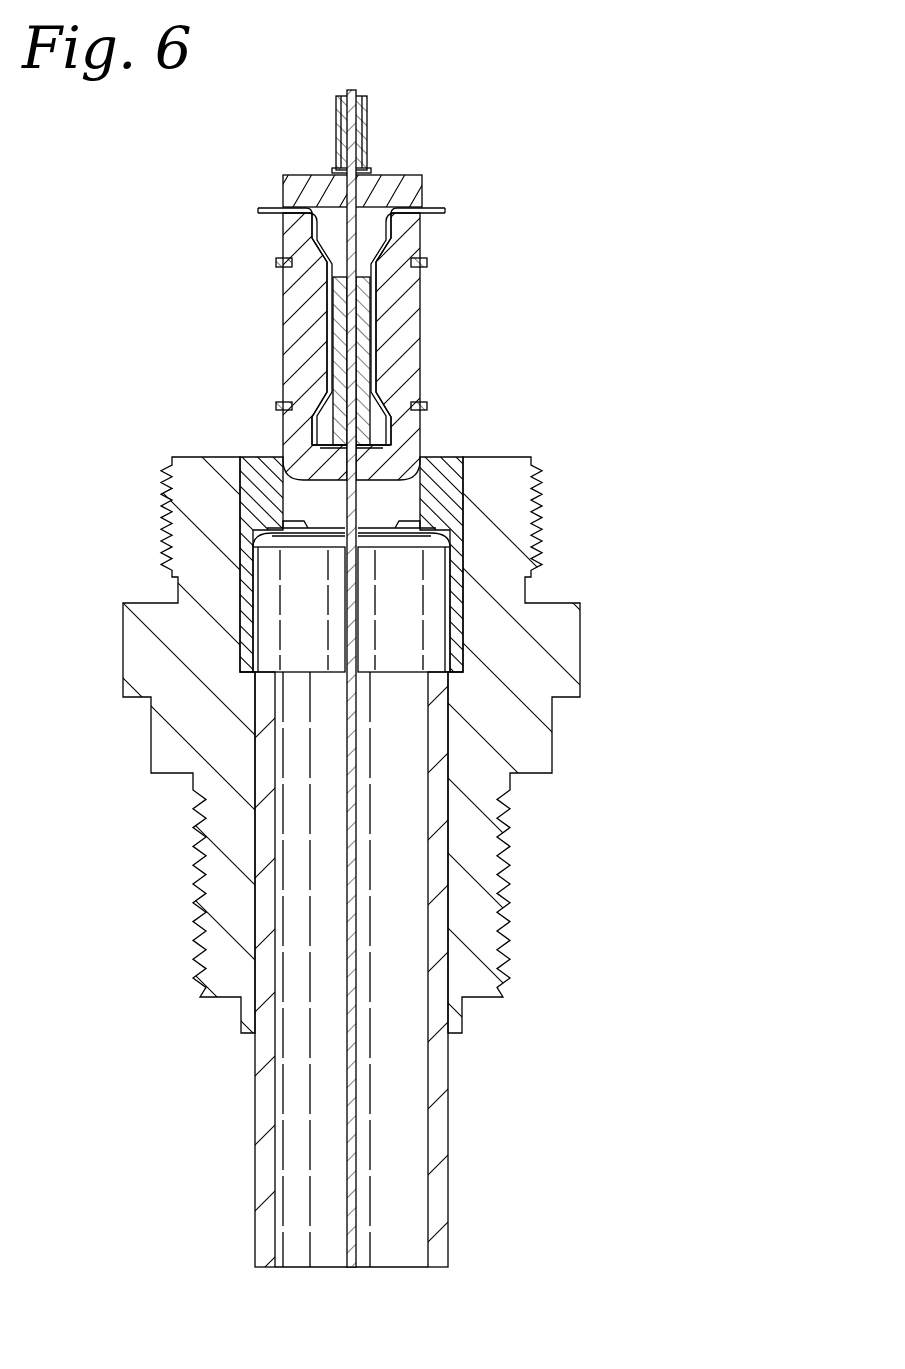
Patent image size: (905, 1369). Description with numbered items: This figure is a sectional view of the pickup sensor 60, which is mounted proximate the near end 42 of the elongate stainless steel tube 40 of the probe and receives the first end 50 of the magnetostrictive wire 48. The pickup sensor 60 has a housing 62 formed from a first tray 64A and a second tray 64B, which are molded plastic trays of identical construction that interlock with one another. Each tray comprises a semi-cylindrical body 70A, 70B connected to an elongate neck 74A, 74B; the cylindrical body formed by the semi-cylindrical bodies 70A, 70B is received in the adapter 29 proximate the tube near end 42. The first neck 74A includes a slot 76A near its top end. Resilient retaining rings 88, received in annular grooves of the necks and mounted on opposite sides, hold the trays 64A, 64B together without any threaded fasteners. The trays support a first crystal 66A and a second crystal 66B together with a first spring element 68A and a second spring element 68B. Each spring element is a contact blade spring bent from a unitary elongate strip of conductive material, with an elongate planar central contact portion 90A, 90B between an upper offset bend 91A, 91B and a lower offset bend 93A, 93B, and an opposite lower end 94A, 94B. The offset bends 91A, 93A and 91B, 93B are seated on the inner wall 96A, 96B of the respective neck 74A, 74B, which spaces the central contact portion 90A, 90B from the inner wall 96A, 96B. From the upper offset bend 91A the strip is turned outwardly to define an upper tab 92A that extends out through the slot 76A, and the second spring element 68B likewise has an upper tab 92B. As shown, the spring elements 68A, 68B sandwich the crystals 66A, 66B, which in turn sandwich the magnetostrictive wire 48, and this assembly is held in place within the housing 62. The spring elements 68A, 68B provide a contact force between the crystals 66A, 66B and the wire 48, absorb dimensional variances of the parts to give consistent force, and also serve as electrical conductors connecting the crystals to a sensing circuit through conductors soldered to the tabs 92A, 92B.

The adapter 29 is at (552, 752).
The elongate stainless steel tube 40 is at (445, 1124).
The near end 42 is at (440, 727).
The magnetostrictive wire 48 is at (353, 1207).
The first end 50 is at (354, 90).
The pickup sensor 60 is at (489, 278).
The housing 62 is at (423, 197).
The first tray 64A is at (283, 347).
The second tray 64B is at (423, 349).
The first crystal 66A is at (310, 356).
The second crystal 66B is at (403, 379).
The first spring element 68A is at (321, 220).
The second spring element 68B is at (383, 219).
The semi-cylindrical body 70A is at (240, 635).
The semi-cylindrical body 70B is at (455, 572).
The elongate neck 74A is at (283, 447).
The elongate neck 74B is at (405, 447).
The slot 76A is at (282, 213).
The retaining rings 88 is at (382, 316).
The central contact portion 90A is at (329, 325).
The central contact portion 90B is at (376, 318).
The upper offset bend 91A is at (275, 264).
The upper offset bend 91B is at (428, 258).
The upper tab 92A is at (268, 207).
The upper tab 92B is at (447, 207).
The lower offset bend 93A is at (282, 419).
The lower offset bend 93B is at (425, 393).
The lower end 94A is at (283, 437).
The lower end 94B is at (398, 433).
The inner wall 96A is at (338, 300).
The inner wall 96B is at (368, 350).